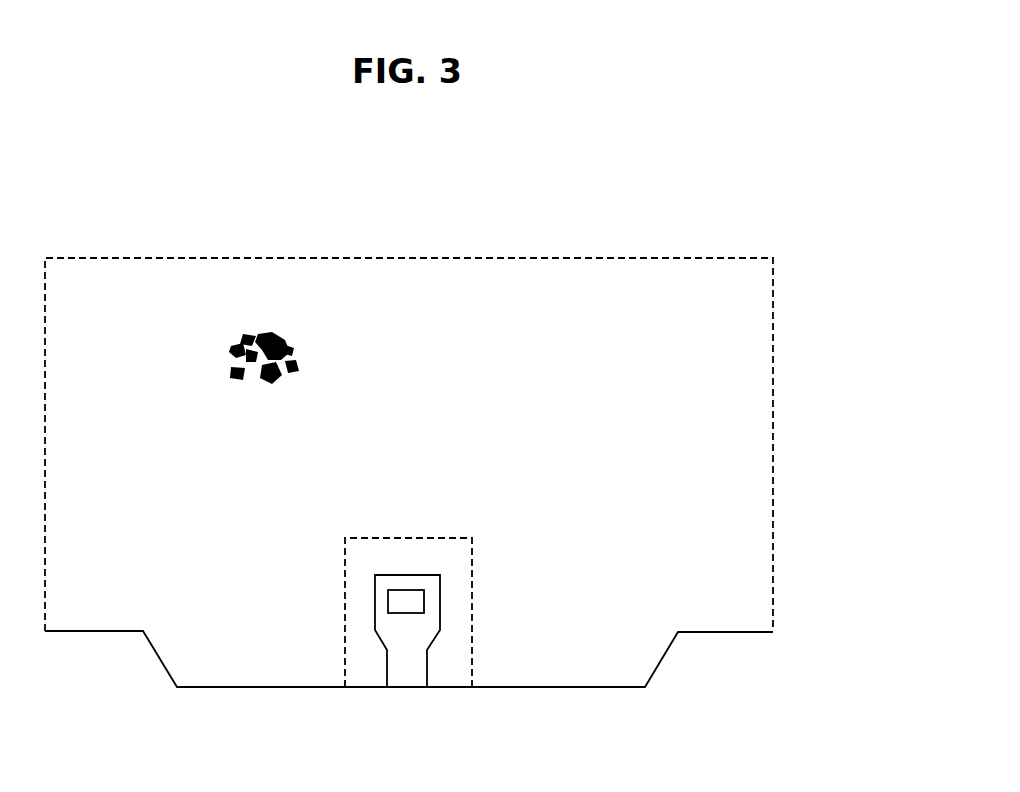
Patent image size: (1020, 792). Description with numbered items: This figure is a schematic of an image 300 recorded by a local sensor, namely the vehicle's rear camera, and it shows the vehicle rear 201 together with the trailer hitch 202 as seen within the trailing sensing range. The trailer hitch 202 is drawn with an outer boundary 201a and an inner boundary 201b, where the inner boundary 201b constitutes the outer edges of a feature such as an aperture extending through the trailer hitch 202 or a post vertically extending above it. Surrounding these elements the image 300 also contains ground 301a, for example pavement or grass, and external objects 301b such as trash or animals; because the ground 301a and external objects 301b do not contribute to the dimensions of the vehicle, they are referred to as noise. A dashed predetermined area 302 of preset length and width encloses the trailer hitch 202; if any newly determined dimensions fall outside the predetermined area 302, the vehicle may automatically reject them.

The image 300 is at (474, 395).
The ground 301a is at (160, 281).
The external objects 301b is at (267, 332).
The predetermined area 302 is at (373, 536).
The trailer hitch 202 is at (403, 588).
The vehicle rear 201 is at (565, 680).
The outer boundary 201a is at (438, 603).
The inner boundary 201b is at (403, 602).